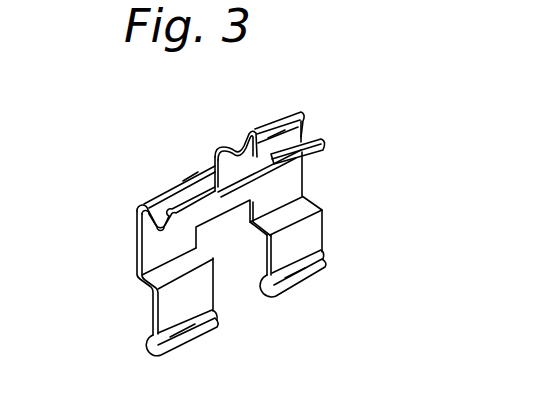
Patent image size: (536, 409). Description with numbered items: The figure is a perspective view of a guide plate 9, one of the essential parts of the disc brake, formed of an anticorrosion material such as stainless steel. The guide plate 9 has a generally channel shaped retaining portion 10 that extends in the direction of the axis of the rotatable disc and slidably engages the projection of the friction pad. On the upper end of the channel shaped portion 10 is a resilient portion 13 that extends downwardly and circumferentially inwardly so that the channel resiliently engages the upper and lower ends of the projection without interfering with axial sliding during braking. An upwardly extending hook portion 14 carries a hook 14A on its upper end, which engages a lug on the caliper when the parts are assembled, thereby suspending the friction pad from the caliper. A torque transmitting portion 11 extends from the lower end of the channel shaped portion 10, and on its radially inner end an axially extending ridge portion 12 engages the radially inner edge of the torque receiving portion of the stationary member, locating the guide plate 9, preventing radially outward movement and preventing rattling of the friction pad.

The guide plate 9 is at (134, 203).
The channel shaped retaining portion 10 is at (137, 250).
The torque transmitting portion 11 is at (283, 245).
The ridge portion 12 is at (146, 338).
The resilient portion 13 is at (323, 141).
The hook portion 14 is at (214, 157).
The hook 14A is at (237, 146).